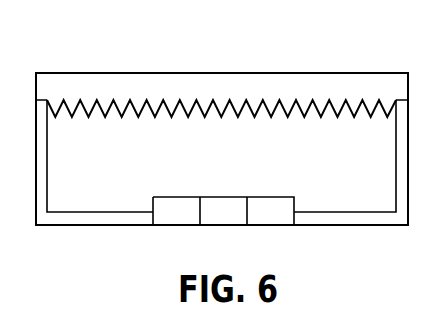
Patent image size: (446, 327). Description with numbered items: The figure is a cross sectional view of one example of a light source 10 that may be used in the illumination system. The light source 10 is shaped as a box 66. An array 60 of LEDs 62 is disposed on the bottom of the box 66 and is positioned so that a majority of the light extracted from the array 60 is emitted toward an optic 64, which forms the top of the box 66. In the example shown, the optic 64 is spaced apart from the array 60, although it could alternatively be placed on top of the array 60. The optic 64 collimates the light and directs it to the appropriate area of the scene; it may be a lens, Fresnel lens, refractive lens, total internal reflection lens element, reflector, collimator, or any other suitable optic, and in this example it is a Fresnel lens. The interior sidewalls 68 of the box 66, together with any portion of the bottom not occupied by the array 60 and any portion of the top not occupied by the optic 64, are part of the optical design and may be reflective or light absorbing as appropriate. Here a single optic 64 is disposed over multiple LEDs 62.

The light source 10 is at (84, 45).
The array 60 is at (318, 196).
The LEDs 62 is at (173, 203).
The optic 64 is at (163, 75).
The box 66 is at (148, 155).
The interior sidewalls 68 is at (48, 173).